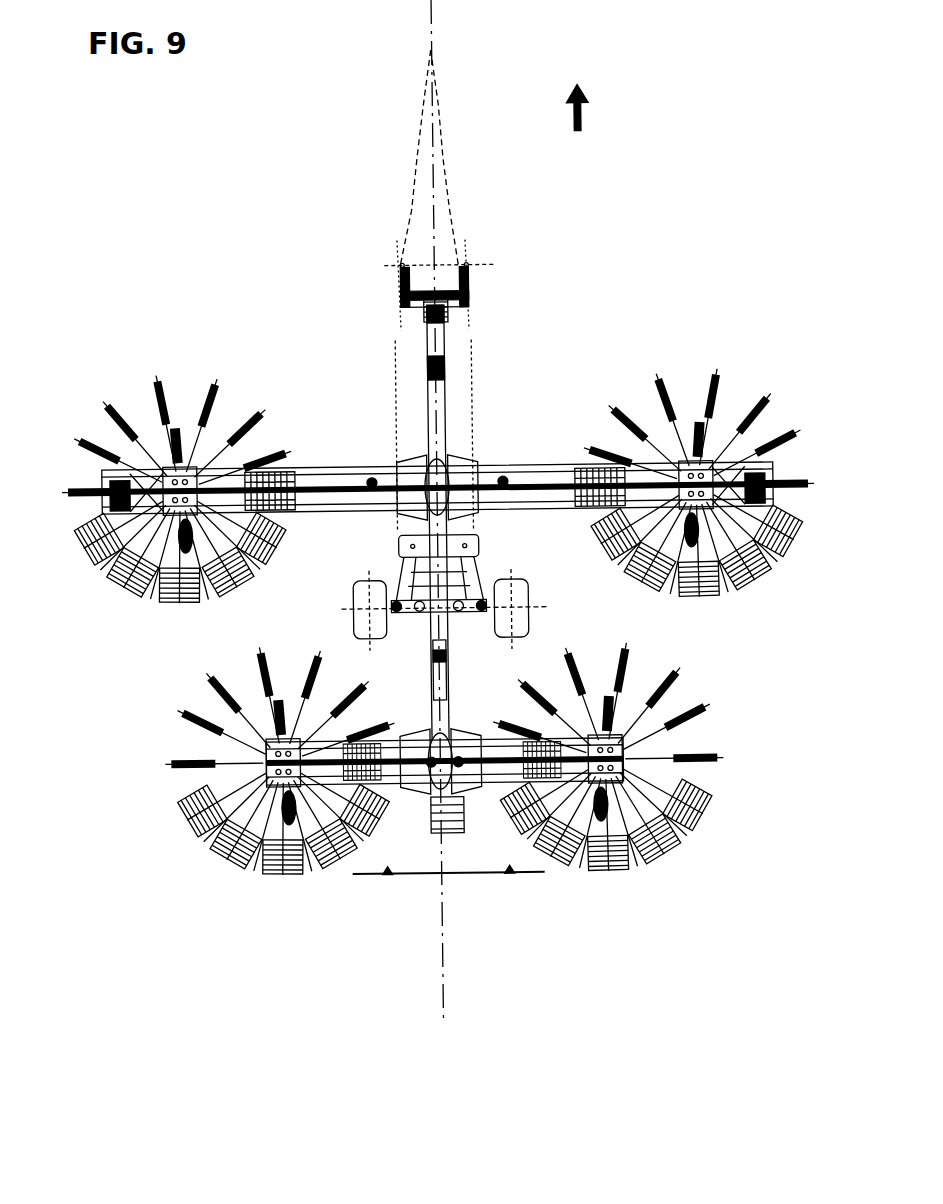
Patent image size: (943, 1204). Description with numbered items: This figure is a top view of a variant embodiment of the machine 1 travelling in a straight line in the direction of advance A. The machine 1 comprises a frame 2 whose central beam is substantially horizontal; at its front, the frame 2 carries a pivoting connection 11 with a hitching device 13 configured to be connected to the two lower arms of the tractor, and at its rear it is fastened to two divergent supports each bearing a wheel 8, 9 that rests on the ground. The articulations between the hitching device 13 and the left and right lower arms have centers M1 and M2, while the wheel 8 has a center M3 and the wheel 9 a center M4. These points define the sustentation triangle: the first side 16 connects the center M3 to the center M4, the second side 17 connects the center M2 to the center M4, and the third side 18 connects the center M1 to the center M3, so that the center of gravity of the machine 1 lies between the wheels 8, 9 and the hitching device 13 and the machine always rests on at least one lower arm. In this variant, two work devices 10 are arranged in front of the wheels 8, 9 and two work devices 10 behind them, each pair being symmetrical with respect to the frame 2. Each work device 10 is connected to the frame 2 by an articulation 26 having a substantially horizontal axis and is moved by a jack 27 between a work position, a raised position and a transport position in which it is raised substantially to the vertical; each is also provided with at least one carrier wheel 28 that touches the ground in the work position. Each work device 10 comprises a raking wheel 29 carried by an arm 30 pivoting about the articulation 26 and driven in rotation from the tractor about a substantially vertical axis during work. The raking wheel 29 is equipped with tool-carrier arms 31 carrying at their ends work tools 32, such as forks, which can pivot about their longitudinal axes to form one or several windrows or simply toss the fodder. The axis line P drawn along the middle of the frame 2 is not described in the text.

The machine 1 is at (392, 884).
The frame 2 is at (449, 390).
The wheel 8 is at (360, 588).
The wheel 9 is at (513, 588).
The work device 10 is at (98, 513).
The pivoting connection 11 is at (425, 315).
The hitching device 13 is at (475, 278).
The first side 16 is at (473, 615).
The second side 17 is at (525, 421).
The third side 18 is at (341, 436).
The articulation 26 is at (400, 460).
The jack 27 is at (372, 482).
The carrier wheel 28 is at (182, 464).
The raking wheel 29 is at (118, 592).
The arm 30 is at (307, 466).
The tool-carrier arm 31 is at (600, 788).
The work tool 32 is at (700, 826).
The center M1 is at (404, 266).
The center M2 is at (468, 266).
The center M3 is at (353, 600).
The center M4 is at (527, 603).
The direction of advance A is at (587, 107).
The longitudinal center plane P is at (448, 1016).